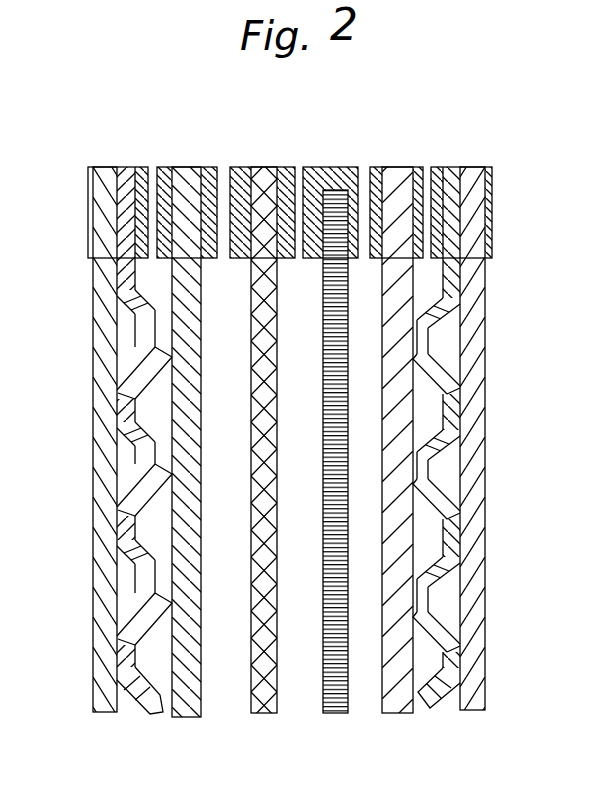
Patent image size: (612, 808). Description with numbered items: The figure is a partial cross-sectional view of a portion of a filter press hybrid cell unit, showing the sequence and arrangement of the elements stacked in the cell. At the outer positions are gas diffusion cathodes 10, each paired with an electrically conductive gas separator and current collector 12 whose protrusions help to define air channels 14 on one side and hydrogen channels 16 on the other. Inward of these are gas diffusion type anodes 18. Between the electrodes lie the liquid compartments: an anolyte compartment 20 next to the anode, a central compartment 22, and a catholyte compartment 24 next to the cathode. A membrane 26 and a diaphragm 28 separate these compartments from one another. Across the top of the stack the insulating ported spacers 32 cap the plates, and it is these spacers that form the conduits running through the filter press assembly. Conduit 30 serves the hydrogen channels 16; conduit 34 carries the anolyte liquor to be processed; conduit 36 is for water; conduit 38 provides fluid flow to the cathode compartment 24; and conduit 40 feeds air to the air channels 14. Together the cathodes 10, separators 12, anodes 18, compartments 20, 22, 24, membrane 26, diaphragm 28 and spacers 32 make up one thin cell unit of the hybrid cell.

The gas diffusion cathode 10 is at (100, 712).
The electrically conductive gas separator and current collector 12 is at (118, 402).
The air channels 14 is at (132, 336).
The hydrogen channels 16 is at (164, 297).
The gas diffusion type anode 18 is at (172, 717).
The anolyte compartment 20 is at (225, 707).
The central compartment 22 is at (278, 707).
The catholyte compartment 24 is at (370, 707).
The membrane 26 is at (260, 707).
The diaphragm 28 is at (338, 707).
The conduit 30 is at (153, 166).
The insulating ported spacers 32 is at (92, 170).
The conduit 34 is at (222, 166).
The conduit 36 is at (298, 167).
The conduit 38 is at (363, 167).
The conduit 40 is at (433, 167).